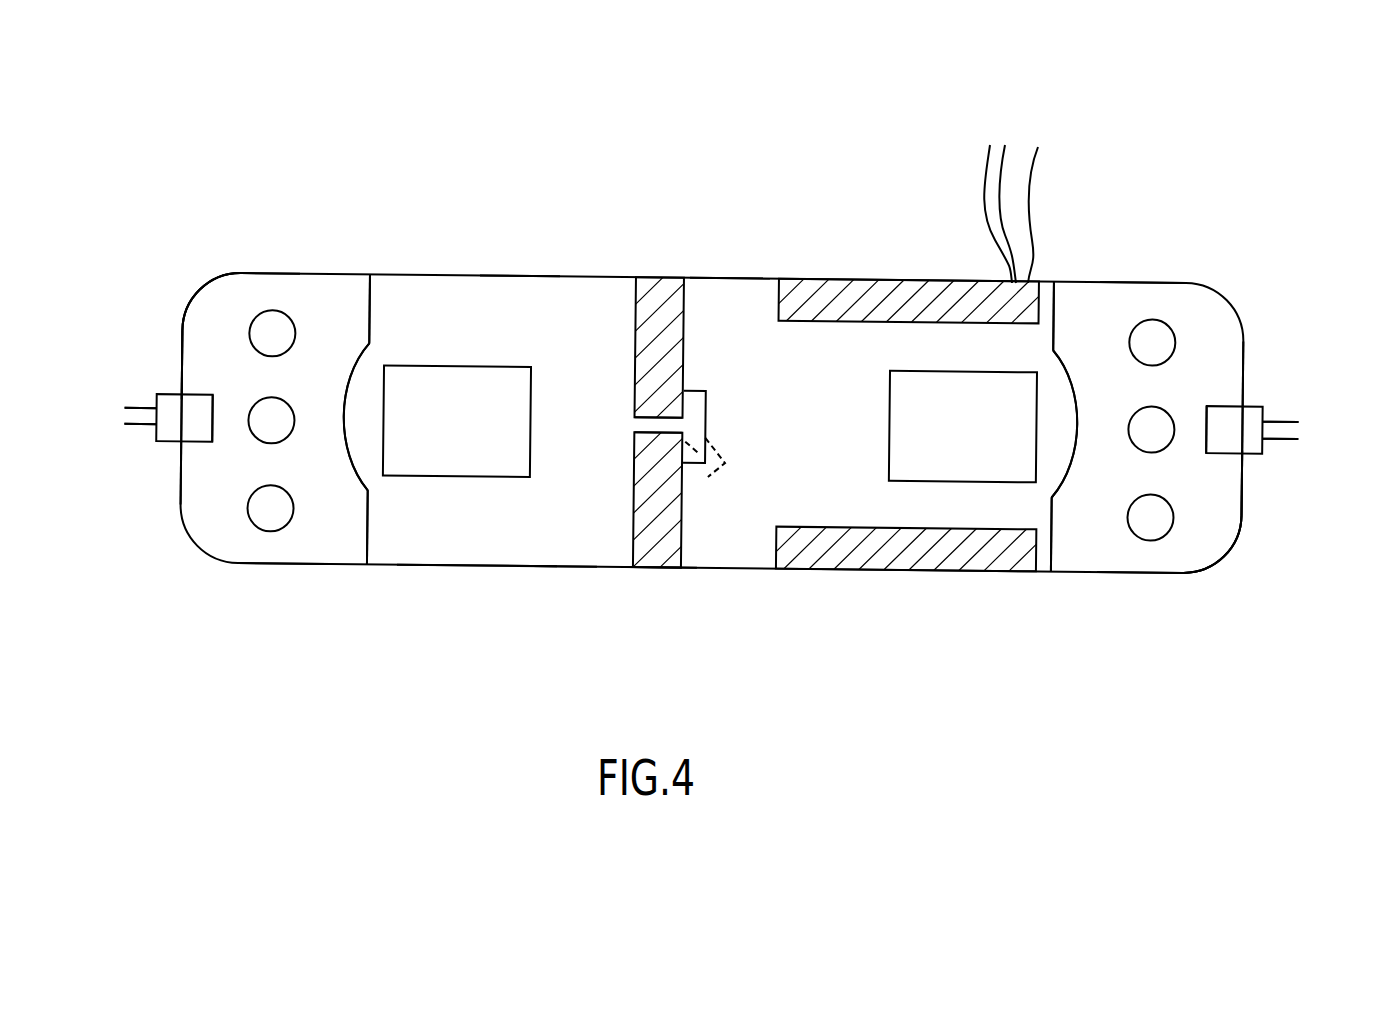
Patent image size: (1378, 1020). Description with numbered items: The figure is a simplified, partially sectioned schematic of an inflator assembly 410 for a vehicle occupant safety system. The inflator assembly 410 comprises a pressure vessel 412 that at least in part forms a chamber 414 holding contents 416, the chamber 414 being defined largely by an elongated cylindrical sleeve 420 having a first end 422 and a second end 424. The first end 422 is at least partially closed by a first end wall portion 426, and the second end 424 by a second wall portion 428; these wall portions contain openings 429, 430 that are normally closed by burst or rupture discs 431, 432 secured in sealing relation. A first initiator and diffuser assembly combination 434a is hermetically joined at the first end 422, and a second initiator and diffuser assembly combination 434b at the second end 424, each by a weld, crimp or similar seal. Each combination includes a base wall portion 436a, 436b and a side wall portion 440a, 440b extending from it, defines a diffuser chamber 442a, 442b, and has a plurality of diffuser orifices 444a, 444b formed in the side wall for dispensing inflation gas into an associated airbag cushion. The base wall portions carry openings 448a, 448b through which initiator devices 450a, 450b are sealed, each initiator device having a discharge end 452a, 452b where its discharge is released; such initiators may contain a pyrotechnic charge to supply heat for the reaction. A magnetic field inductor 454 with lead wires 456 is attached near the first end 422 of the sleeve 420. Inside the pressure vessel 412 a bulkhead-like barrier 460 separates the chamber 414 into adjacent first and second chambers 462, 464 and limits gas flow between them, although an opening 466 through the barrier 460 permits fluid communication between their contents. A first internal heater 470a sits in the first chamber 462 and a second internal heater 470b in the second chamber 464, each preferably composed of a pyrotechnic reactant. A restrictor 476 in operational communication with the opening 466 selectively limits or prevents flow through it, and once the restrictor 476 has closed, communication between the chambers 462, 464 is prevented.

The inflator assembly 410 is at (712, 323).
The pressure vessel 412 is at (570, 270).
The chamber 414 is at (472, 567).
The contents 416 is at (562, 528).
The elongated cylindrical sleeve 420 is at (687, 570).
The first end 422 is at (1051, 593).
The second end 424 is at (368, 584).
The first end wall portion 426 is at (1072, 283).
The second wall portion 428 is at (368, 528).
The opening 429 is at (1043, 344).
The opening 430 is at (382, 339).
The burst or rupture disc 431 is at (1054, 498).
The burst or rupture disc 432 is at (347, 377).
The first initiator and diffuser assembly combination 434a is at (1160, 600).
The second initiator and diffuser assembly combination 434b is at (222, 258).
The base wall portion 436a is at (1244, 347).
The base wall portion 436b is at (183, 350).
The side wall portion 440a is at (1147, 286).
The side wall portion 440b is at (270, 565).
The diffuser chamber 442a is at (1192, 534).
The diffuser chamber 442b is at (220, 330).
The diffuser orifices 444a is at (1163, 532).
The diffuser orifices 444b is at (272, 309).
The opening 448a is at (1240, 404).
The opening 448b is at (180, 395).
The initiator device 450a is at (1240, 438).
The initiator device 450b is at (177, 423).
The discharge end 452a is at (1208, 426).
The discharge end 452b is at (213, 418).
The magnetic field inductor 454 is at (890, 292).
The lead wires 456 is at (1013, 283).
The barrier 460 is at (655, 302).
The first chamber 462 is at (720, 315).
The second chamber 464 is at (515, 300).
The opening 466 is at (653, 437).
The first internal heater 470a is at (992, 435).
The second internal heater 470b is at (492, 431).
The restrictor 476 is at (700, 393).